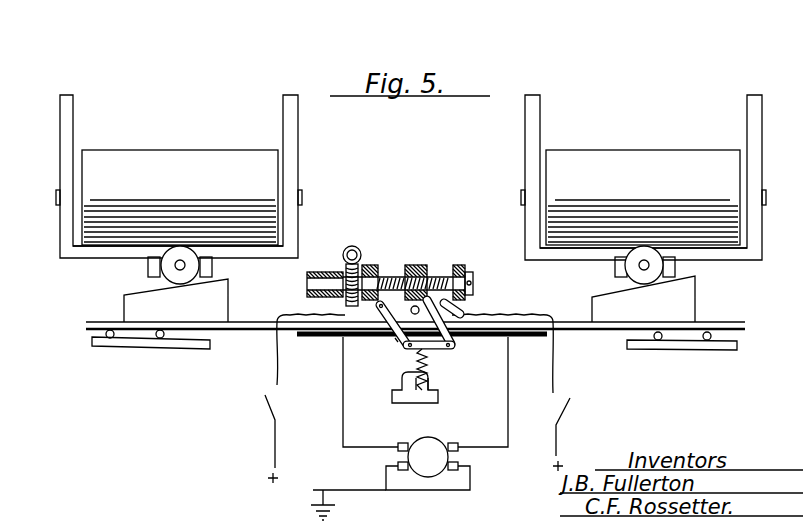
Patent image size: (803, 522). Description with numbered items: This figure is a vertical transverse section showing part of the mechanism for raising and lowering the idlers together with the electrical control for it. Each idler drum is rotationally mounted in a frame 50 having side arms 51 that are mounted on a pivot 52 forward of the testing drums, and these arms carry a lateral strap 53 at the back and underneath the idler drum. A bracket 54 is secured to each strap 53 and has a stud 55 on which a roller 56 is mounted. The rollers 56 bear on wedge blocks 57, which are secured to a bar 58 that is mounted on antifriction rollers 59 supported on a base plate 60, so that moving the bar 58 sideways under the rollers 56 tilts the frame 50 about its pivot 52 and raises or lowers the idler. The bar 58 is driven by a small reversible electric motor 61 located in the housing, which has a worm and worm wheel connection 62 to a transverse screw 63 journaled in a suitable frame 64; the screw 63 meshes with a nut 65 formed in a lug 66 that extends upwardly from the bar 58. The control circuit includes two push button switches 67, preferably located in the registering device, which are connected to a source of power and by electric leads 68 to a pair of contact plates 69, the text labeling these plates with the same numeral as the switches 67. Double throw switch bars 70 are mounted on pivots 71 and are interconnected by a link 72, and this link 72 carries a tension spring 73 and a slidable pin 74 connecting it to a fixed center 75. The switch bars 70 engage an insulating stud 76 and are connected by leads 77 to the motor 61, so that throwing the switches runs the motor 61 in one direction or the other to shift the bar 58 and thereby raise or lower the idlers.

The frame 50 is at (92, 145).
The side arms 51 is at (65, 133).
The pivot 52 is at (590, 258).
The lateral strap 53 is at (108, 255).
The bracket 54 is at (150, 263).
The stud 55 is at (200, 265).
The roller 56 is at (628, 268).
The wedge blocks 57 is at (140, 302).
The bar 58 is at (568, 333).
The antifriction rollers 59 is at (110, 338).
The base plate 60 is at (150, 346).
The electric motor 61 is at (452, 460).
The worm and worm wheel connection 62 is at (362, 262).
The transverse screw 63 is at (388, 277).
The frame 64 is at (468, 278).
The nut 65 is at (418, 275).
The lug 66 is at (413, 330).
The push button switches 67 is at (262, 405).
The electric leads 68 is at (290, 316).
The pin 69 is at (462, 310).
The double throw switch bars 70 is at (455, 340).
The pivots 71 is at (448, 349).
The link 72 is at (408, 350).
The tension spring 73 is at (430, 357).
The slidable pin 74 is at (416, 392).
The fixed center 75 is at (422, 440).
The insulating stud 76 is at (393, 338).
The leads 77 is at (343, 390).